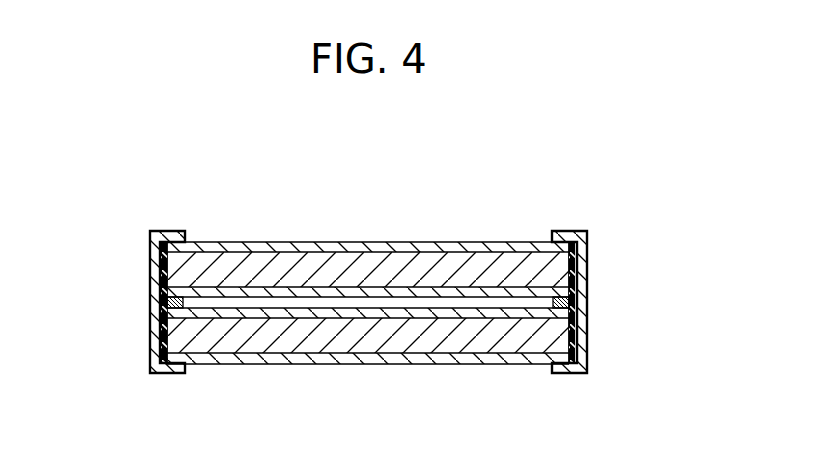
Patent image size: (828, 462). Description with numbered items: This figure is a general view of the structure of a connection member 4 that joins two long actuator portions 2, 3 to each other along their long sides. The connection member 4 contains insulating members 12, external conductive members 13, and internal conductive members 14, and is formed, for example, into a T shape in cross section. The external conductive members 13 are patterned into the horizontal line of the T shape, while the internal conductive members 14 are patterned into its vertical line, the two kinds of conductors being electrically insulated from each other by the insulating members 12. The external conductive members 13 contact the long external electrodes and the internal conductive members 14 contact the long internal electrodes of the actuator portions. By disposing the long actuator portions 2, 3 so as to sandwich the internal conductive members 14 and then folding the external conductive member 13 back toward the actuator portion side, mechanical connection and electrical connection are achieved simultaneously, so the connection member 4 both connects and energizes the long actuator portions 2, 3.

The long actuator portion 2 is at (335, 237).
The long actuator portion 3 is at (343, 372).
The connection member 4 is at (362, 304).
The insulating member 12 is at (165, 329).
The external conductive member 13 is at (171, 231).
The internal conductive member 14 is at (183, 302).